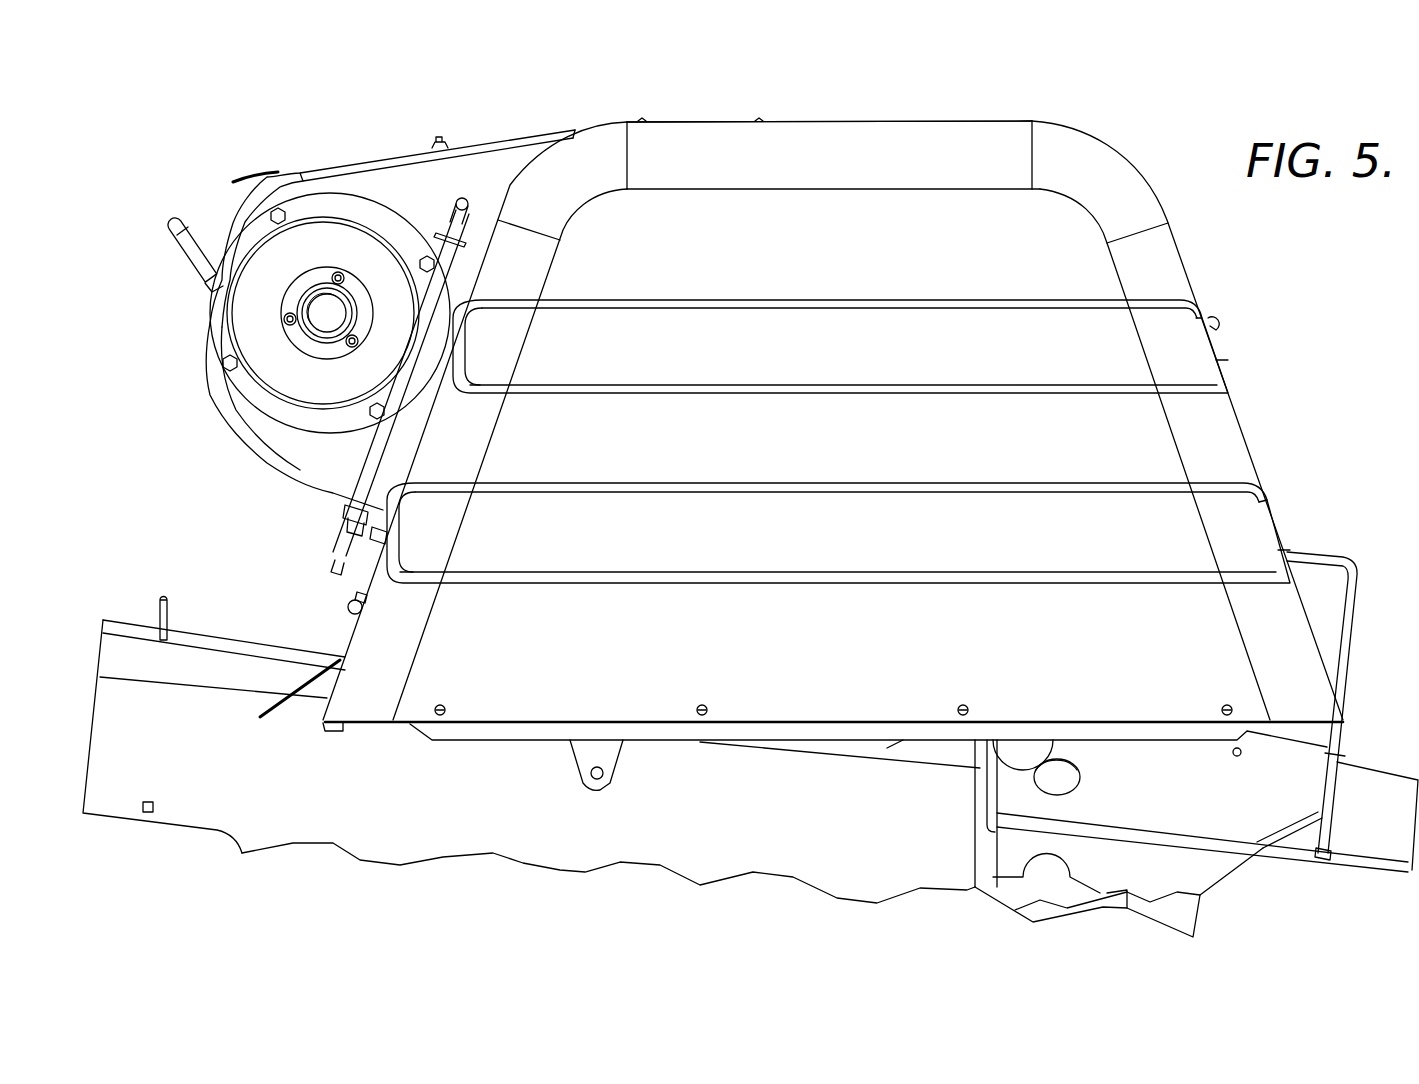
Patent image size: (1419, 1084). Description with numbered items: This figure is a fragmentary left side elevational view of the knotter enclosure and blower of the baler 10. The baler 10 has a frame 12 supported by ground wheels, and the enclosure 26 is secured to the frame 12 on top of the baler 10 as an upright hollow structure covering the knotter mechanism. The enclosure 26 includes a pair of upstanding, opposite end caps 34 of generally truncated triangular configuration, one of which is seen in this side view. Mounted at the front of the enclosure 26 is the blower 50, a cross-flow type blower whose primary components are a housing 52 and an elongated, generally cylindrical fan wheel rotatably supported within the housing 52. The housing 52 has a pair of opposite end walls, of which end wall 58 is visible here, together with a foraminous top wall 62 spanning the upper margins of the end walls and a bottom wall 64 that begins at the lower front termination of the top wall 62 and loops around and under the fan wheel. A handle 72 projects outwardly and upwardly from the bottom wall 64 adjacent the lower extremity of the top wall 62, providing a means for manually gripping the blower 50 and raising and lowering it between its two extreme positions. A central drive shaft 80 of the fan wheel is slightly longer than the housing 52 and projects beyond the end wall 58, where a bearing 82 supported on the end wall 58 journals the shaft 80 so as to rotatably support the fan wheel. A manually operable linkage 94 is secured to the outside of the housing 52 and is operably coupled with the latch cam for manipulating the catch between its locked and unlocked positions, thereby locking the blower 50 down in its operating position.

The baler 10 is at (212, 848).
The frame 12 is at (541, 857).
The enclosure 26 is at (1039, 112).
The end cap 34 is at (803, 152).
The blower 50 is at (266, 170).
The housing 52 is at (236, 450).
The end wall 58 is at (410, 180).
The foraminous top wall 62 is at (331, 170).
The bottom wall 64 is at (203, 392).
The handle 72 is at (185, 250).
The drive shaft 80 is at (327, 315).
The bearing 82 is at (355, 306).
The linkage 94 is at (380, 440).